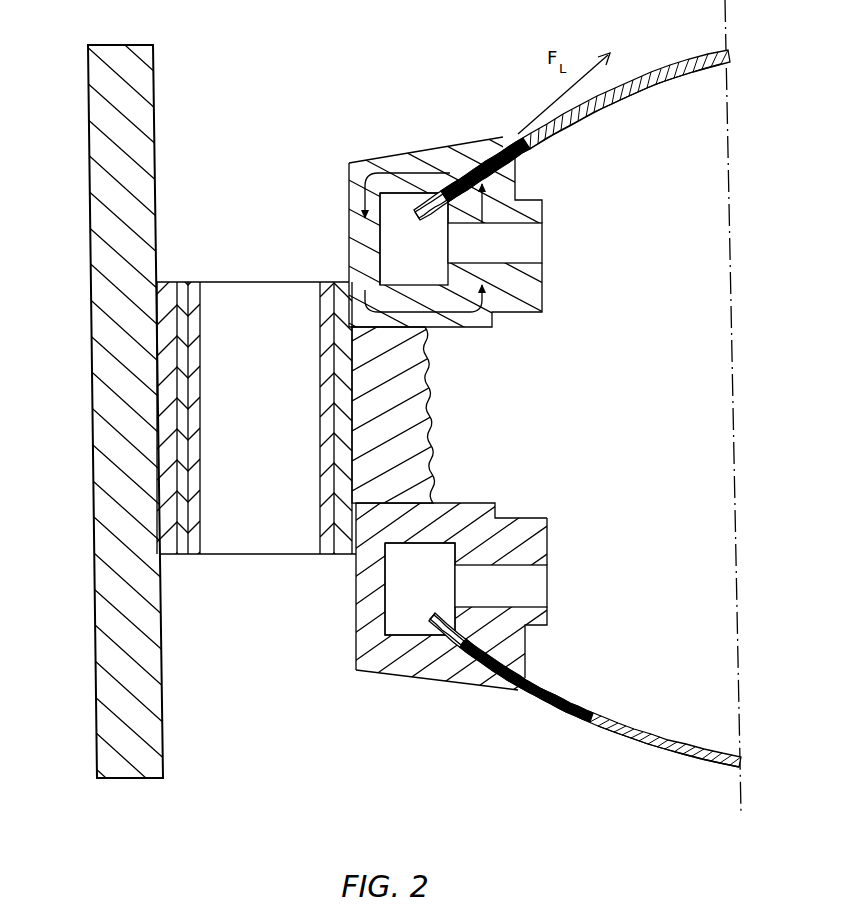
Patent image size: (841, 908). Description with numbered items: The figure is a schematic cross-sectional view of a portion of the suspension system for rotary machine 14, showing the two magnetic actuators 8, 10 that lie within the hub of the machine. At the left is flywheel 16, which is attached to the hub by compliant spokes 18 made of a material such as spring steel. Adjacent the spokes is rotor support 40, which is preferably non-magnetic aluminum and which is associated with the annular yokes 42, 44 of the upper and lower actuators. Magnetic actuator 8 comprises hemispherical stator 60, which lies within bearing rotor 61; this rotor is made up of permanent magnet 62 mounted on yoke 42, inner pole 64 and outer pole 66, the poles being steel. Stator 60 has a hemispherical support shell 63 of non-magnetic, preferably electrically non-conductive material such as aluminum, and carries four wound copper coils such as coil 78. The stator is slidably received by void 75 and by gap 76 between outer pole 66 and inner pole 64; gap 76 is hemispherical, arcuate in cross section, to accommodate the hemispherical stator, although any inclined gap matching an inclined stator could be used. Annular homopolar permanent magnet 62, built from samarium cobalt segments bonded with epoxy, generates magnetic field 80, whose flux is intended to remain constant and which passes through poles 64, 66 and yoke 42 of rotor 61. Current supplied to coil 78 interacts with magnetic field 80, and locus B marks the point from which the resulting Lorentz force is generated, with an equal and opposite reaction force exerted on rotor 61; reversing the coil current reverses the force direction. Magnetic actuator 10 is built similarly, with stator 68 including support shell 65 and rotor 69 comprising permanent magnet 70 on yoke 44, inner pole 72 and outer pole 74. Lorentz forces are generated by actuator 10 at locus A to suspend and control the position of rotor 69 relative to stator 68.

The magnetic actuator 8 is at (498, 126).
The magnetic actuator 10 is at (533, 703).
The rotary machine 14 is at (286, 87).
The flywheel 16 is at (97, 168).
The spokes 18 is at (269, 368).
The rotor support 40 is at (435, 413).
The annular yoke 42 is at (523, 302).
The annular yoke 44 is at (538, 533).
The hemispherical stator 60 is at (667, 63).
The bearing rotor 61 is at (333, 238).
The permanent magnet 62 is at (535, 248).
The hemispherical support shell 63 is at (653, 82).
The inner pole 64 is at (507, 187).
The support shell 65 is at (648, 738).
The outer pole 66 is at (407, 157).
The stator 68 is at (663, 752).
The rotor 69 is at (342, 677).
The permanent magnet 70 is at (537, 587).
The inner pole 72 is at (515, 650).
The outer pole 74 is at (428, 663).
The void 75 is at (358, 163).
The gap 76 is at (457, 168).
The coil 78 is at (528, 137).
The magnetic field 80 is at (393, 215).
The locus A is at (473, 658).
The locus B is at (467, 165).